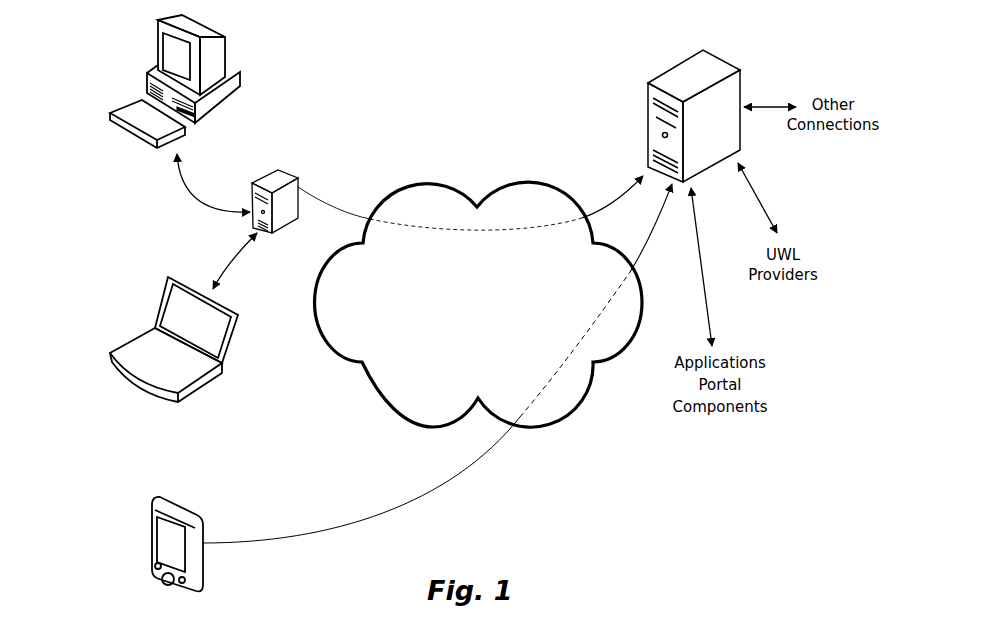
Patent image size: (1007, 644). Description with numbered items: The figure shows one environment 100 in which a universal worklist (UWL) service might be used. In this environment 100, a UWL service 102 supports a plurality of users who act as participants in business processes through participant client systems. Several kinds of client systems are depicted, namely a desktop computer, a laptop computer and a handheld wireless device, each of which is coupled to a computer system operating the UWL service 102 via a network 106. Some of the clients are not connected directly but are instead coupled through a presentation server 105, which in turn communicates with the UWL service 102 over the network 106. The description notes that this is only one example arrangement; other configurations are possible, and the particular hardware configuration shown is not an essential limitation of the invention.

The environment 100 is at (459, 22).
The UWL service 102 is at (728, 62).
The presentation server 105 is at (280, 230).
The network 106 is at (528, 182).